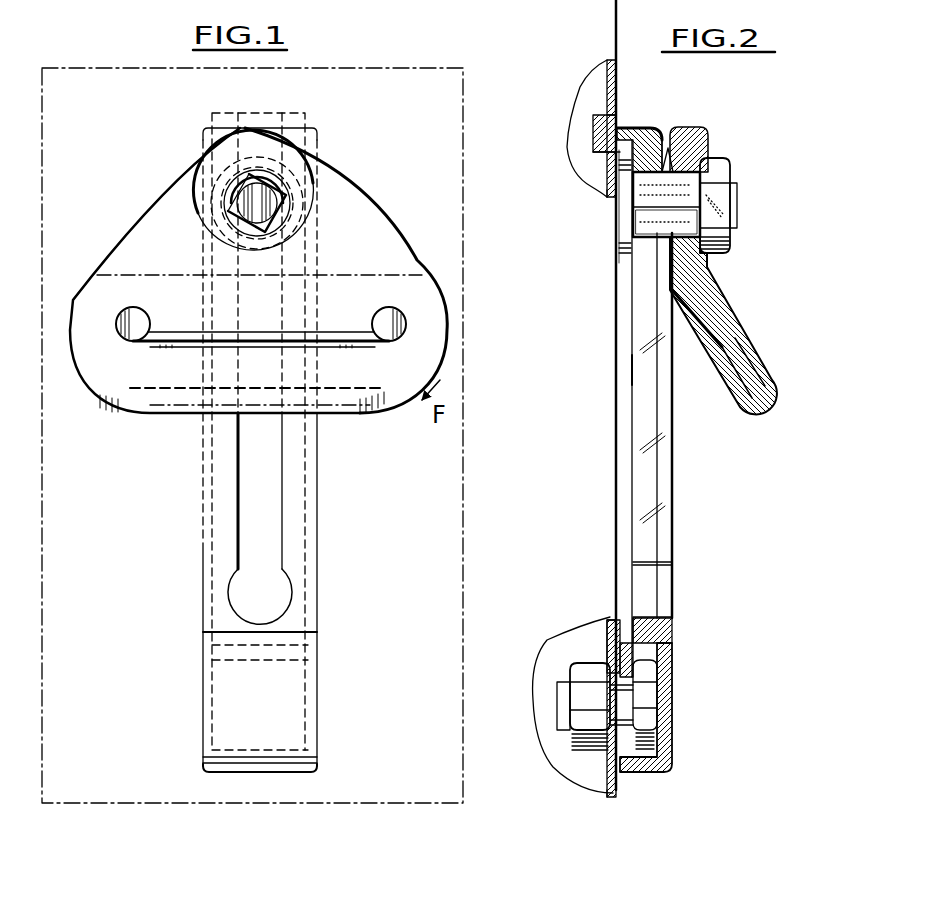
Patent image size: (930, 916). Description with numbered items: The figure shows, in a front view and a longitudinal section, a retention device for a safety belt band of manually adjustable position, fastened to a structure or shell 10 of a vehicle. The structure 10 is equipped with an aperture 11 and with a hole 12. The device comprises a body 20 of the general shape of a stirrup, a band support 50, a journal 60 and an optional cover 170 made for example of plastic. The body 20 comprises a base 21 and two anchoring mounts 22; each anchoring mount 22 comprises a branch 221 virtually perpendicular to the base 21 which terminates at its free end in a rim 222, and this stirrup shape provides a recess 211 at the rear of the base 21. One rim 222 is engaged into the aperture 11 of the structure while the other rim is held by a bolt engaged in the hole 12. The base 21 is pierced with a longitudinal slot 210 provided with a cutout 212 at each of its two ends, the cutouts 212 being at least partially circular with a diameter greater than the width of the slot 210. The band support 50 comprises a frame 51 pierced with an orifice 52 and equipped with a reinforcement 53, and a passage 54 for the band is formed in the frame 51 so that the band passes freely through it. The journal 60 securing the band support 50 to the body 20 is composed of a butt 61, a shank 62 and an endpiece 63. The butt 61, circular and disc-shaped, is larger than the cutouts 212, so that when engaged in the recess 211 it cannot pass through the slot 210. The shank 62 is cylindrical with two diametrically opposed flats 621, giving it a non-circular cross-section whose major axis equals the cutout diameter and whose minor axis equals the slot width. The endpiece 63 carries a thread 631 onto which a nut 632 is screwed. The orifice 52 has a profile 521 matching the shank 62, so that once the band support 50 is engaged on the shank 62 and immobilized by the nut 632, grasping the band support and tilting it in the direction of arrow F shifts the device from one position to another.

In FIG. 1, the structure or shell 10 is at (143, 530).
In FIG. 2, the structure or shell 10 is at (596, 85).
In FIG. 2, the aperture 11 is at (612, 132).
In FIG. 2, the hole 12 is at (612, 675).
In FIG. 2, the body 20 is at (672, 645).
In FIG. 1, the base 21 is at (221, 545).
In FIG. 2, the base 21 is at (632, 332).
In FIG. 2, the anchoring mount 22 is at (595, 163).
In FIG. 1, the band support 50 is at (377, 215).
In FIG. 1, the frame 51 is at (374, 250).
In FIG. 2, the orifice 52 is at (695, 130).
In FIG. 2, the reinforcement 53 is at (720, 312).
In FIG. 1, the passage 54 is at (383, 332).
In FIG. 2, the passage 54 is at (740, 337).
In FIG. 2, the journal 60 is at (744, 202).
In FIG. 1, the butt 61 is at (222, 180).
In FIG. 2, the butt 61 is at (625, 220).
In FIG. 1, the shank 62 is at (287, 193).
In FIG. 2, the shank 62 is at (660, 192).
In FIG. 2, the endpiece 63 is at (737, 197).
In FIG. 1, the cover 170 is at (318, 705).
In FIG. 2, the cover 170 is at (673, 672).
In FIG. 1, the longitudinal slot 210 is at (265, 517).
In FIG. 2, the longitudinal slot 210 is at (648, 417).
In FIG. 2, the recess 211 is at (628, 373).
In FIG. 1, the cutout 212 is at (263, 605).
In FIG. 2, the branch 221 is at (650, 128).
In FIG. 2, the rim 222 is at (602, 115).
In FIG. 1, the profile 521 is at (293, 222).
In FIG. 1, the flat 621 is at (260, 174).
In FIG. 2, the flat 621 is at (660, 220).
In FIG. 2, the thread 631 is at (740, 218).
In FIG. 2, the nut 632 is at (725, 242).